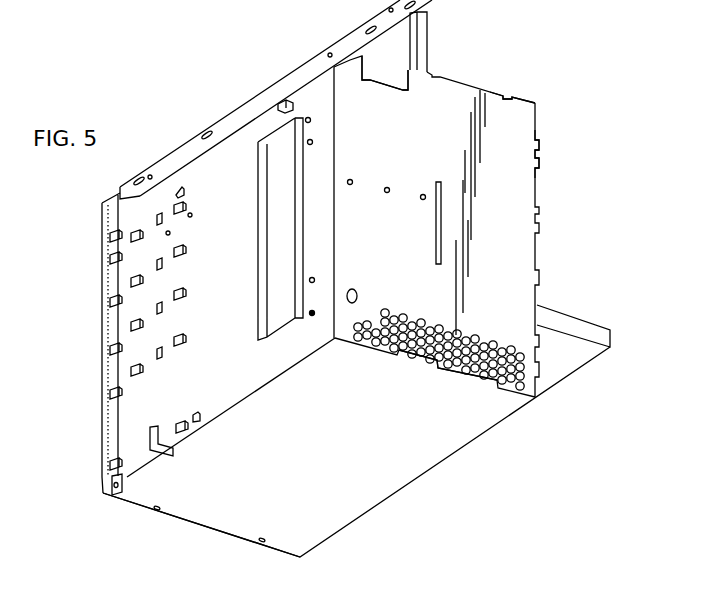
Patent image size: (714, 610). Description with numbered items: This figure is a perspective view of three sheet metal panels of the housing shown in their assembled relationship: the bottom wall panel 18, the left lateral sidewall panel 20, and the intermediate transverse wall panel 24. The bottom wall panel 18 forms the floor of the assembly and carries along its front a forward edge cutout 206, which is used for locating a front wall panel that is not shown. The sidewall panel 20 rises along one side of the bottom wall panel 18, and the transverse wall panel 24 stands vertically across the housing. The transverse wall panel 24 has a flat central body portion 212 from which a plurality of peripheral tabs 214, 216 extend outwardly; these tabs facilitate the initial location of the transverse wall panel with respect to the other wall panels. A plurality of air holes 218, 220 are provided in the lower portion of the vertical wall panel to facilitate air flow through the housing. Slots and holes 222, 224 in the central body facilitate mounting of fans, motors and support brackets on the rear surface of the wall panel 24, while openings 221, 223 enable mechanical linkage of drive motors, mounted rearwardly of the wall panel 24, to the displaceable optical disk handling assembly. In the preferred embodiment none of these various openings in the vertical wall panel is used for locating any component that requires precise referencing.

The bottom wall panel 18 is at (367, 489).
The left lateral sidewall panel 20 is at (210, 163).
The intermediate transverse wall panel 24 is at (520, 261).
The forward edge cutout 206 is at (222, 530).
The flat central body portion 212 is at (490, 300).
The peripheral tab 214 is at (540, 141).
The peripheral tab 216 is at (505, 96).
The air hole 218 is at (440, 372).
The air hole 220 is at (458, 370).
The opening 221 is at (383, 68).
The slot 222 is at (441, 214).
The opening 223 is at (357, 289).
The hole 224 is at (389, 186).